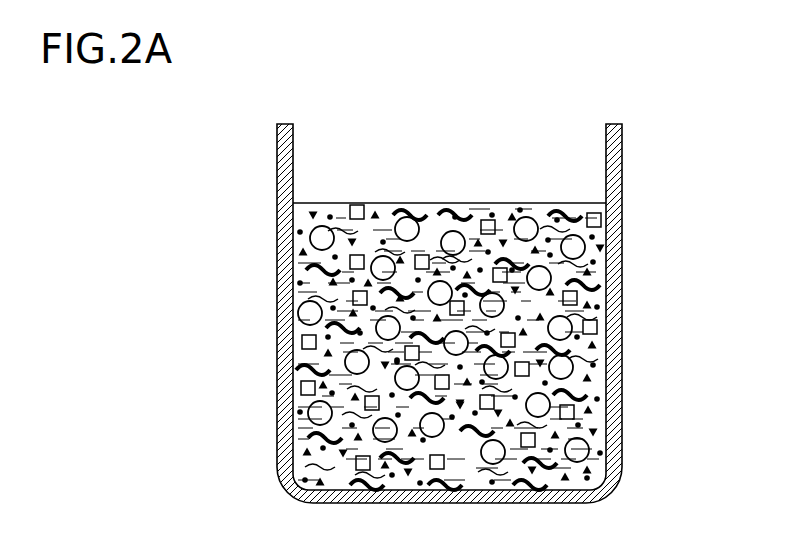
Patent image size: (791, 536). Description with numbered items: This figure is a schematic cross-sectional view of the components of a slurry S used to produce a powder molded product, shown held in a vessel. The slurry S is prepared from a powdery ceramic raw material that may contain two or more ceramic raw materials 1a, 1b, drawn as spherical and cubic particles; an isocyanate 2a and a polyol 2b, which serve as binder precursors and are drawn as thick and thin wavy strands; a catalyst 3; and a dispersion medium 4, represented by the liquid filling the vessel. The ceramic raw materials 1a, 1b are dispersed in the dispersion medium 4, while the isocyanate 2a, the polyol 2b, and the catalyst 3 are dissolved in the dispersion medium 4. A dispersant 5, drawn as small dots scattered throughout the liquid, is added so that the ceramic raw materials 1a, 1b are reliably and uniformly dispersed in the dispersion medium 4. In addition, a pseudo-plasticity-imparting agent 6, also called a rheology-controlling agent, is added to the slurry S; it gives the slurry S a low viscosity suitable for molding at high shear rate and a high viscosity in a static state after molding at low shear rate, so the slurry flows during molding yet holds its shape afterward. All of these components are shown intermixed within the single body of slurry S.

The ceramic raw material 1a is at (527, 225).
The ceramic raw material 1b is at (357, 204).
The isocyanate 2a is at (405, 206).
The polyol 2b is at (343, 227).
The catalyst 3 is at (512, 213).
The dispersion medium 4 is at (603, 267).
The dispersant 5 is at (599, 399).
The pseudo-plasticity-imparting agent 6 is at (604, 248).
The slurry S is at (458, 195).